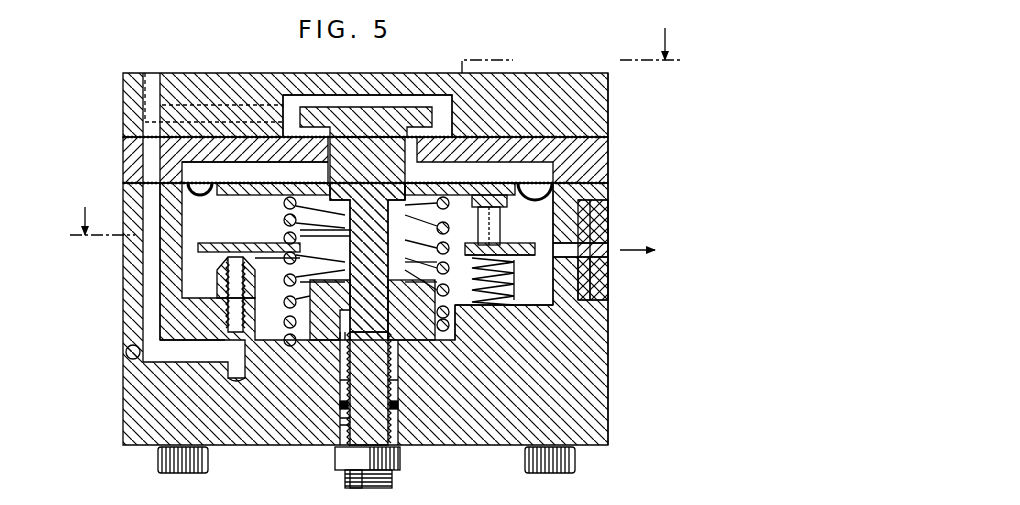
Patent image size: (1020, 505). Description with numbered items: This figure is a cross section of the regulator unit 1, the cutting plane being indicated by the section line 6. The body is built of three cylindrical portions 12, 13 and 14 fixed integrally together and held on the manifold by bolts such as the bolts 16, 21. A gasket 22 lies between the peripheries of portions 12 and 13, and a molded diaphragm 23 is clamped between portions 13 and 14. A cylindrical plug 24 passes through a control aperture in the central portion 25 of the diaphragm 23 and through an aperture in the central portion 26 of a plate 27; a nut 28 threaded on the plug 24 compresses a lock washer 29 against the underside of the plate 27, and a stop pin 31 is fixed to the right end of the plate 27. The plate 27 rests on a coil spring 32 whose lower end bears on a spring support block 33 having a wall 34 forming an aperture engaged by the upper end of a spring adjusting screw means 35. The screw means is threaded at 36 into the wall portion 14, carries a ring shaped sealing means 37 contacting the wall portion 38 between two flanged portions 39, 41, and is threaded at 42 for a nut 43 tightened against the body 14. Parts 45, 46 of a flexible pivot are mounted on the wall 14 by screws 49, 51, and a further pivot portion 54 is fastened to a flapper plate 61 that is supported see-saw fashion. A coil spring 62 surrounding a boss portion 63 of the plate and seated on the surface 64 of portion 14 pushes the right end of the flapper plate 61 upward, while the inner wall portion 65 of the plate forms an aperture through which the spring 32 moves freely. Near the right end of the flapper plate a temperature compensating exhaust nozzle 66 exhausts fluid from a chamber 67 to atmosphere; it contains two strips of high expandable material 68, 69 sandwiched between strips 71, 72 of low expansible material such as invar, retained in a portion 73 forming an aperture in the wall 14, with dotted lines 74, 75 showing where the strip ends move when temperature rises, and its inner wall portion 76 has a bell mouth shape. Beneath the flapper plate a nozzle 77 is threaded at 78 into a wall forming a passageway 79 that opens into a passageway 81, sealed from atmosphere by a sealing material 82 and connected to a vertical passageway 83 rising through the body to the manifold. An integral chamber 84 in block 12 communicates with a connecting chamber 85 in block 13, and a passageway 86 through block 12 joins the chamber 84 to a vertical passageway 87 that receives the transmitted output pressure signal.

The regulator unit 1 is at (622, 152).
The section line 6- 6 is at (375, 122).
The cylindrical portion 12 is at (133, 100).
The cylindrical portion 13 is at (133, 155).
The cylindrical portion 14 is at (143, 413).
The bolt 16 is at (553, 474).
The bolt 21 is at (186, 474).
The gasket 22 is at (516, 187).
The molded diaphragm 23 is at (203, 190).
The cylindrical plug 24 is at (350, 115).
The central portion of the diaphragm 25 is at (358, 178).
The central portion of the plate 26 is at (378, 192).
The plate 27 is at (420, 186).
The nut 28 is at (330, 185).
The lock washer 29 is at (449, 205).
The stop pin 31 is at (505, 218).
The coil spring 32 is at (284, 206).
The spring support block 33 is at (435, 338).
The wall 34 is at (393, 340).
The spring adjusting screw means 35 is at (390, 482).
The threaded lower portion 36 is at (390, 372).
The ring shaped sealing means 37 is at (398, 408).
The wall portion 38 is at (397, 392).
The flanged portion 39 is at (340, 404).
The flanged portion 41 is at (340, 420).
The threaded lower portion 42 is at (348, 483).
The nut 43 is at (400, 460).
The flexible pivot part 45 is at (284, 282).
The flexible pivot part 46 is at (330, 310).
The screw 49 is at (436, 265).
The screw 51 is at (436, 282).
The flexible pivot portion 54 is at (335, 232).
The flapper plate 61 is at (214, 243).
The coil spring 62 is at (490, 304).
The boss portion 63 is at (516, 292).
The surface 64 is at (505, 307).
The inner wall portion 65 is at (285, 262).
The temperature compensating exhaust nozzle 66 is at (606, 248).
The chamber 67 is at (565, 296).
The strip of high expandable material 68 is at (600, 214).
The strip of high expandable material 69 is at (598, 270).
The strip of low expansible material 71 is at (598, 279).
The strip of low expansible material 72 is at (592, 293).
The aperture-forming portion 73 is at (598, 196).
The dotted line position 74 is at (540, 246).
The dotted line position 75 is at (514, 264).
The inner wall portion 76 is at (518, 290).
The nozzle 77 is at (218, 274).
The threaded connection 78 is at (226, 319).
The passageway 79 is at (247, 365).
The passageway 81 is at (192, 352).
The sealing material 82 is at (126, 352).
The vertical passageway 83 is at (150, 290).
The integral chamber 84 is at (300, 103).
The connecting chamber 85 is at (258, 178).
The passageway 86 is at (222, 105).
The vertical passageway 87 is at (167, 92).